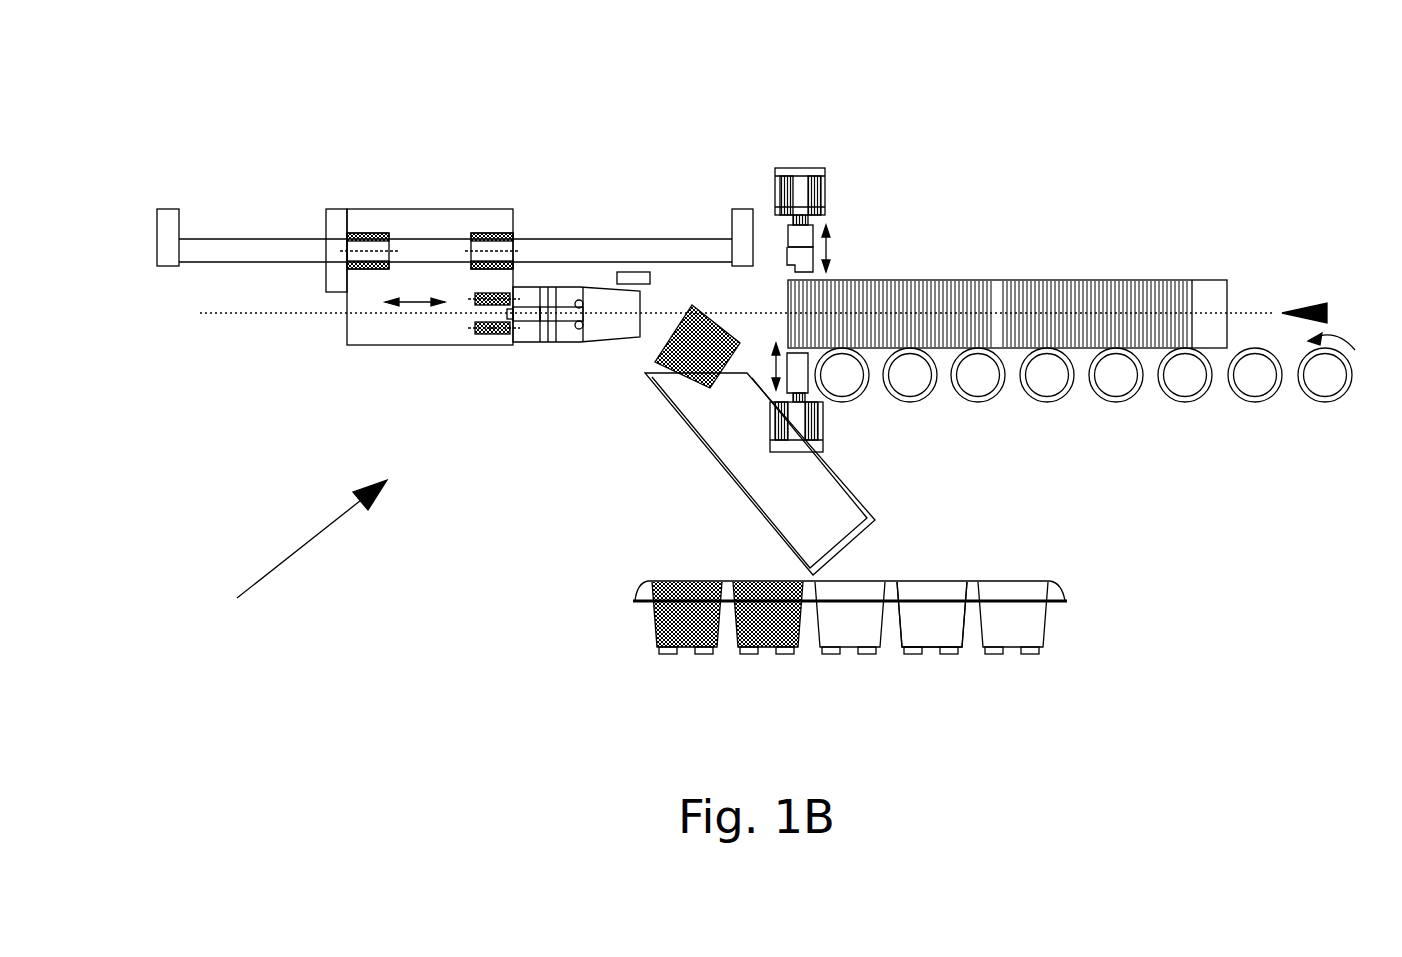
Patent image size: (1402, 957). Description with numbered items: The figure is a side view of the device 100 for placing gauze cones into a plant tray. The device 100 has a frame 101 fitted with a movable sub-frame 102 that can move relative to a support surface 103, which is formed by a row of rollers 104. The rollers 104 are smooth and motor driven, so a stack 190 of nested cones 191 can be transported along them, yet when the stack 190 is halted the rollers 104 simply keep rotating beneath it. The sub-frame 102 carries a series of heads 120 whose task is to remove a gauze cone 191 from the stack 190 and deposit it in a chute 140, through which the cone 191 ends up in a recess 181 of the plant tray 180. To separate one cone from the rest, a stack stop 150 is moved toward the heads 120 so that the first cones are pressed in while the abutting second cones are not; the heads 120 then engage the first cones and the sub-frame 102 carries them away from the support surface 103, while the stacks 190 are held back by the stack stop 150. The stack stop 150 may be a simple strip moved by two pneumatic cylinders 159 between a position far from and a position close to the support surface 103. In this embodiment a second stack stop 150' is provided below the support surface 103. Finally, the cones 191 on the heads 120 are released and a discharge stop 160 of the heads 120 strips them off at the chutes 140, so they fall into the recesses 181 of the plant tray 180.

The device 100 is at (285, 561).
The frame 101 is at (203, 252).
The movable sub-frame 102 is at (337, 218).
The support surface 103 is at (1262, 338).
The rollers 104 is at (1182, 385).
The heads 120 is at (602, 303).
The chute 140 is at (707, 457).
The stack stop 150 is at (872, 169).
The second stack stop 150' is at (905, 259).
The pneumatic cylinders 159 is at (795, 182).
The discharge stop 160 is at (627, 275).
The plant tray 180 is at (1055, 598).
The recesses 181 is at (938, 628).
The stack 190 is at (1098, 287).
The gauze cone 191 is at (687, 307).